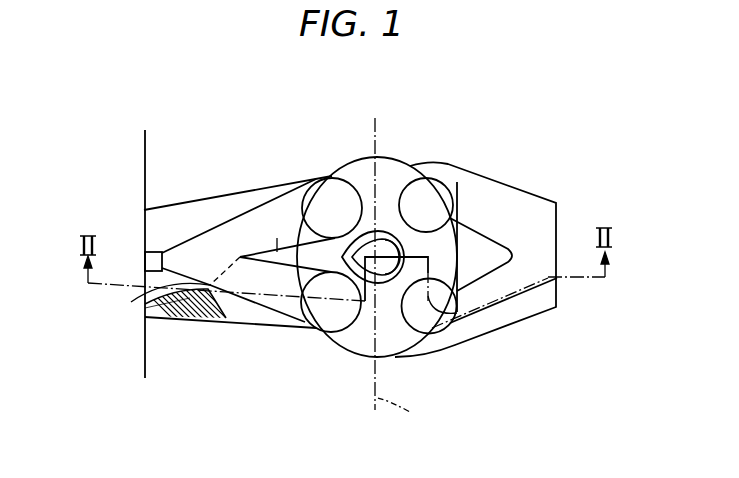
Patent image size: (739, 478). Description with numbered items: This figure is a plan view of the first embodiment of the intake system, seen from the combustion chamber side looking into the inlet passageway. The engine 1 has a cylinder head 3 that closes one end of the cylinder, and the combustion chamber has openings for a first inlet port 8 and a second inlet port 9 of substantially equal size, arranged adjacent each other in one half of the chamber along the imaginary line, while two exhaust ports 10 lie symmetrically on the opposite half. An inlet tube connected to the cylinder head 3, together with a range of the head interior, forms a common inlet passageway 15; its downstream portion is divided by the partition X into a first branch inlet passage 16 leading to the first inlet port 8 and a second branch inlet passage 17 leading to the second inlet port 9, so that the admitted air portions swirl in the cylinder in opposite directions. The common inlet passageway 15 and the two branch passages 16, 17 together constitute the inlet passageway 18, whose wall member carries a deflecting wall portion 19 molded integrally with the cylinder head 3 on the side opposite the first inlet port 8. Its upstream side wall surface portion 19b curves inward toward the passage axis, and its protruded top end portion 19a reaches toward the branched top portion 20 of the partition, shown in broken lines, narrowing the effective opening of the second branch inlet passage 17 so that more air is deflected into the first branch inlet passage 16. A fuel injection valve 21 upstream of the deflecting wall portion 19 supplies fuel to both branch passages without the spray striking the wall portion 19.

The engine 1 is at (408, 133).
The cylinder head 3 is at (143, 173).
The first inlet port 8 is at (345, 183).
The second inlet port 9 is at (324, 320).
The exhaust ports 10 is at (434, 182).
The common inlet passageway 15 is at (177, 218).
The first branch inlet passage 16 is at (268, 195).
The second branch inlet passage 17 is at (275, 315).
The inlet passageway 18 is at (241, 323).
The deflecting wall portion 19 is at (197, 310).
The protruded top end portion 19a is at (153, 301).
The upstream side wall surface portion 19b is at (166, 306).
The branched top portion 20 is at (240, 257).
The fuel injection valve 21 is at (145, 254).